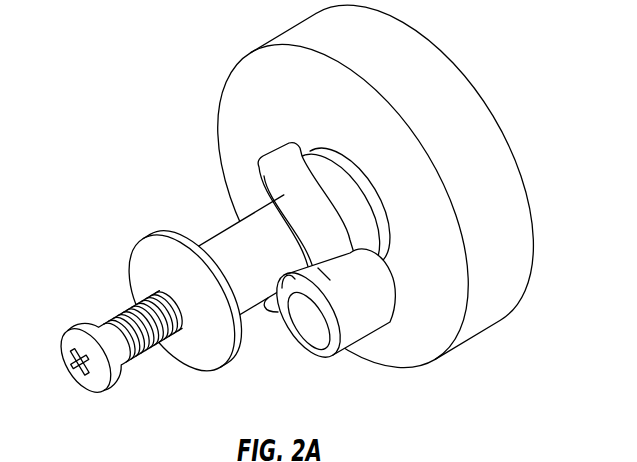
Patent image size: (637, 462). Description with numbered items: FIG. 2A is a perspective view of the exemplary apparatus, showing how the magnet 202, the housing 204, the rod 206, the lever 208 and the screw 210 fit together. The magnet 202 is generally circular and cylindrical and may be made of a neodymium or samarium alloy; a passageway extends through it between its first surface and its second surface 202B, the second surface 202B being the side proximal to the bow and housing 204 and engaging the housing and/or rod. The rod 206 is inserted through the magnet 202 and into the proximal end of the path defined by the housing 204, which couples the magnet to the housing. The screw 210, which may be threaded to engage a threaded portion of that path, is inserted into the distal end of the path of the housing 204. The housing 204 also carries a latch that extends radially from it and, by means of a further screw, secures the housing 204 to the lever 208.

The magnet 202 is at (375, 211).
The second surface 202B is at (427, 350).
The housing 204 is at (210, 245).
The rod 206 is at (361, 205).
The lever 208 is at (350, 332).
The screw 210 is at (74, 370).